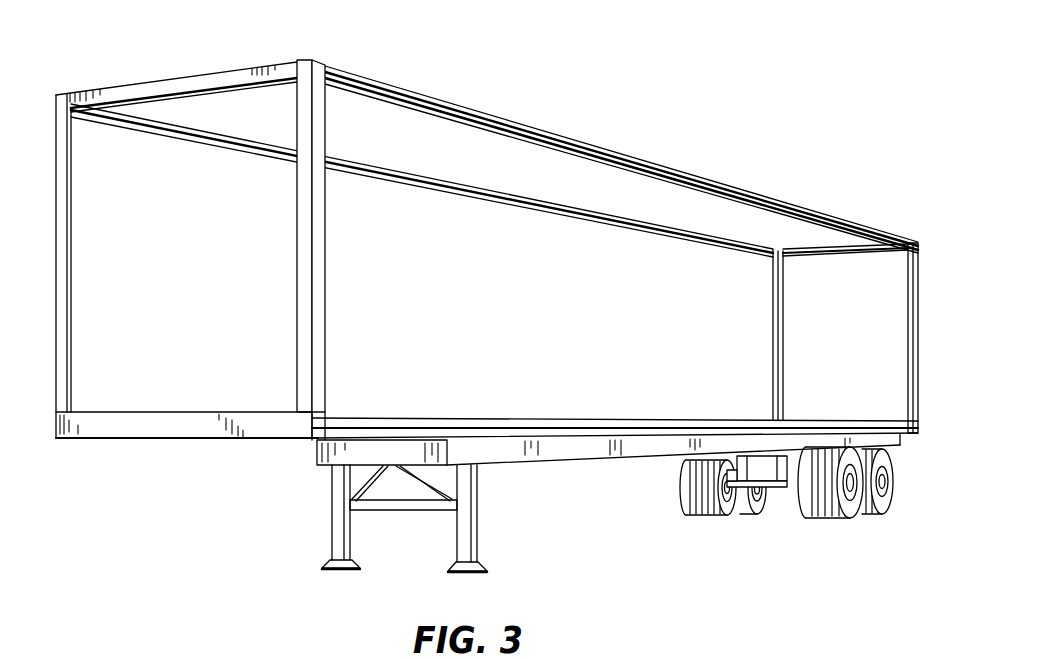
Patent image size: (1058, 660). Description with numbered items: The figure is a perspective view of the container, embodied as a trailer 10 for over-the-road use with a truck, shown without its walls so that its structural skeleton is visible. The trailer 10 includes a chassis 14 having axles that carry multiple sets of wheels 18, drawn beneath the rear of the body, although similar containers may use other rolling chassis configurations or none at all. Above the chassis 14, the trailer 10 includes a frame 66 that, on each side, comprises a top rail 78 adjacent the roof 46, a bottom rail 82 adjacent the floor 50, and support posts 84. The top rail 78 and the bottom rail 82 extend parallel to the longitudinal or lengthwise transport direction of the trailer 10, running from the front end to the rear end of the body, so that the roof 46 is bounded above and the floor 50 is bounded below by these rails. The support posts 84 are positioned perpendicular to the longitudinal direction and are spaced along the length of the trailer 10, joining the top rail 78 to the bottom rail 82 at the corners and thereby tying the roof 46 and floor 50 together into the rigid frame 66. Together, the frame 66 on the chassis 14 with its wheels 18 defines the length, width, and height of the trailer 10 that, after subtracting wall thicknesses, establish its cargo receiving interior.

The trailer 10 is at (501, 292).
The chassis 14 is at (523, 452).
The wheels 18 is at (734, 509).
The roof 46 is at (487, 159).
The floor 50 is at (487, 433).
The frame 66 is at (501, 226).
The top rail 78 is at (689, 173).
The bottom rail 82 is at (630, 419).
The support posts 84 is at (303, 268).